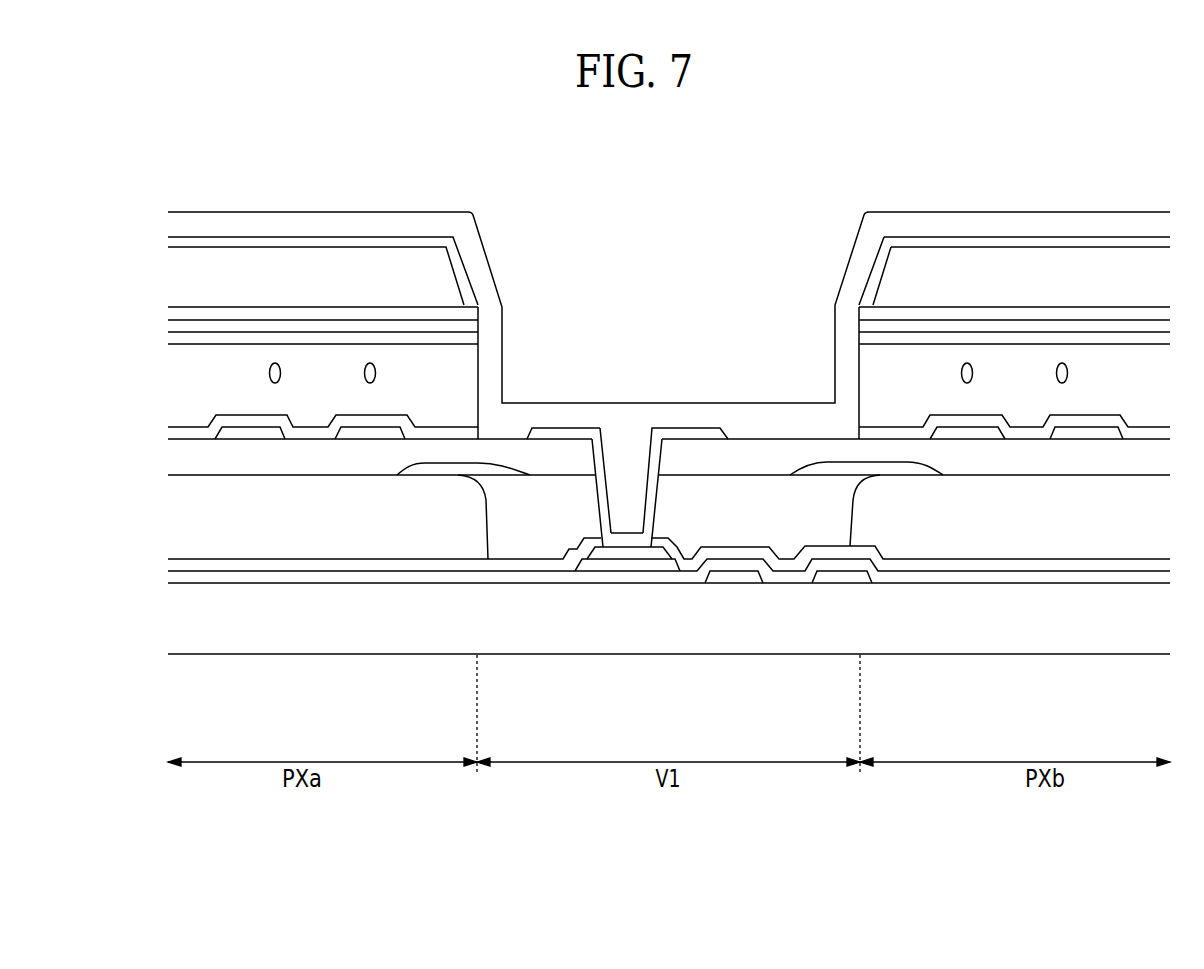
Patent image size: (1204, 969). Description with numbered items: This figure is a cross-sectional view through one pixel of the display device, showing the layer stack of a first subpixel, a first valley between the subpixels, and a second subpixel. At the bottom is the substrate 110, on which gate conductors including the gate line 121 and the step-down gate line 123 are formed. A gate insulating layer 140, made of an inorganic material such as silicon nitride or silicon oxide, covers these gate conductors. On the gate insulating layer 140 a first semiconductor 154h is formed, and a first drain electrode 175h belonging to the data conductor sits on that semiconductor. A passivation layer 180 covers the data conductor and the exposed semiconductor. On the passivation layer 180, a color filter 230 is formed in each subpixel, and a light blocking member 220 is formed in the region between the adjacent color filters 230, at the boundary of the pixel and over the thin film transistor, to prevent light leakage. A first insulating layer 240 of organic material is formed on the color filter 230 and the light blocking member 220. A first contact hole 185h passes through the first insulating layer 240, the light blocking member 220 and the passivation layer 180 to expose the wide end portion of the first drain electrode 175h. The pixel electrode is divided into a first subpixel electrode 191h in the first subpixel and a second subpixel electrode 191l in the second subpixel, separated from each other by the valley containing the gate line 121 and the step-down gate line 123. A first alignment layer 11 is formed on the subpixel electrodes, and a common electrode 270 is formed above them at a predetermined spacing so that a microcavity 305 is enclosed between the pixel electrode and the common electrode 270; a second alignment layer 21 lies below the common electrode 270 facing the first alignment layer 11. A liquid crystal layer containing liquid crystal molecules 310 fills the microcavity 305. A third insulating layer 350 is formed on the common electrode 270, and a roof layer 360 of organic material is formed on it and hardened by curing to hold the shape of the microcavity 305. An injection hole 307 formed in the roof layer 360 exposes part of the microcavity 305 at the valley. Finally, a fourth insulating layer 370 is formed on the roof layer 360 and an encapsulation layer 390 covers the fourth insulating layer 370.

The first alignment layer 11 is at (1028, 432).
The second alignment layer 21 is at (207, 338).
The substrate 110 is at (196, 622).
The gate line 121 is at (735, 577).
The step-down gate line 123 is at (843, 577).
The gate insulating layer 140 is at (783, 577).
The first semiconductor 154h is at (615, 563).
The first drain electrode 175h is at (648, 553).
The passivation layer 180 is at (1130, 563).
The first contact hole 185h is at (654, 490).
The first subpixel electrode 191h is at (243, 433).
The second subpixel electrode 191l is at (973, 432).
The light blocking member 220 is at (517, 528).
The color filter 230 is at (422, 528).
The first insulating layer 240 is at (312, 457).
The common electrode 270 is at (258, 323).
The microcavity 305 is at (341, 371).
The injection hole 307 is at (478, 375).
The liquid crystal molecules 310 is at (1068, 373).
The third insulating layer 350 is at (1069, 315).
The roof layer 360 is at (404, 270).
The fourth insulating layer 370 is at (1122, 242).
The encapsulation layer 390 is at (904, 223).